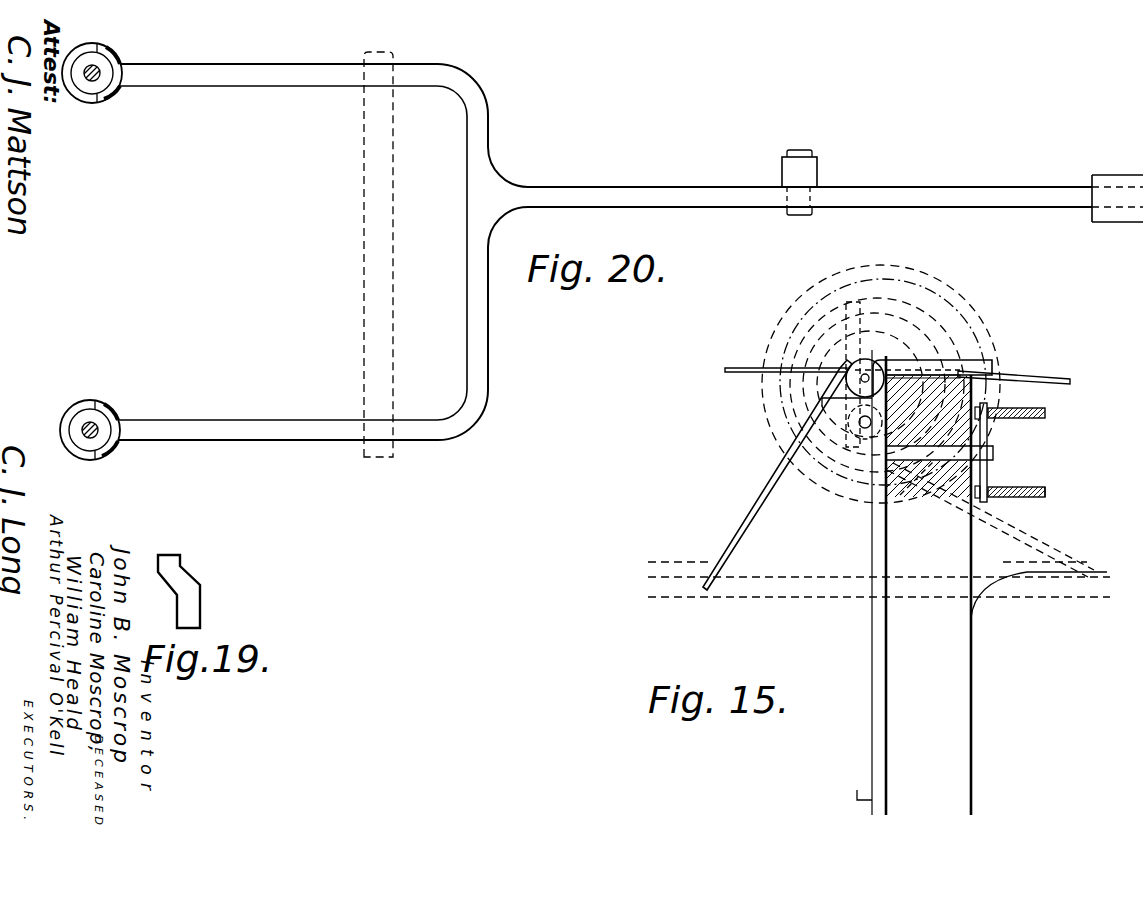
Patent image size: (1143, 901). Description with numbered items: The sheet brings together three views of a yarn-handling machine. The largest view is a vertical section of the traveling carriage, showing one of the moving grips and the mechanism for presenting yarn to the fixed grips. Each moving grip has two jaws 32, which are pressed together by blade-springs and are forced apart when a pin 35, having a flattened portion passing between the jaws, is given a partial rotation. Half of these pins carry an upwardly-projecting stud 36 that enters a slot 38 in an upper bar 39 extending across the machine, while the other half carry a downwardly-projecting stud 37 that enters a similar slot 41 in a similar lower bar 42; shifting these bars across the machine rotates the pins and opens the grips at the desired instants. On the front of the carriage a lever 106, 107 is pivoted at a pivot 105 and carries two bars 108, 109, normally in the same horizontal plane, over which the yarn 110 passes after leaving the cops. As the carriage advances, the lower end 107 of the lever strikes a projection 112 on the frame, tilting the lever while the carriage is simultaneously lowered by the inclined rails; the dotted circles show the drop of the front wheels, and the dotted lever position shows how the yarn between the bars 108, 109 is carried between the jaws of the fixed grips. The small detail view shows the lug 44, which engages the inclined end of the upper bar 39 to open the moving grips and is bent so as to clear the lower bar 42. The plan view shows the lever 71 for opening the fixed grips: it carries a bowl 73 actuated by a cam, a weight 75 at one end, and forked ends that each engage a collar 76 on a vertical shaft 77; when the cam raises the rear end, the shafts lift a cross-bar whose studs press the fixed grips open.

In FIG. 20, the lever 71 is at (650, 197).
In FIG. 20, the bowl 73 is at (786, 176).
In FIG. 20, the weight 75 is at (1120, 181).
In FIG. 20, the collar 76 is at (93, 102).
In FIG. 20, the vertical shaft 77 is at (88, 78).
In FIG. 19, the lug 44 is at (197, 594).
In FIG. 15, the jaw 32 is at (879, 620).
In FIG. 15, the pin 35 is at (952, 456).
In FIG. 15, the upwardly-projecting stud 36 is at (988, 437).
In FIG. 15, the downwardly-projecting stud 37 is at (988, 483).
In FIG. 15, the slot 38 is at (988, 408).
In FIG. 15, the bar 39 is at (1046, 411).
In FIG. 15, the slot 41 is at (995, 499).
In FIG. 15, the bar 42 is at (1046, 492).
In FIG. 15, the pivot 105 is at (867, 377).
In FIG. 15, the lever 106 is at (953, 369).
In FIG. 15, the lower end of lever 107 is at (757, 494).
In FIG. 15, the bar 108 is at (992, 373).
In FIG. 15, the bar 109 is at (905, 372).
In FIG. 15, the yarn 110 is at (741, 366).
In FIG. 15, the projection 112 is at (1041, 571).